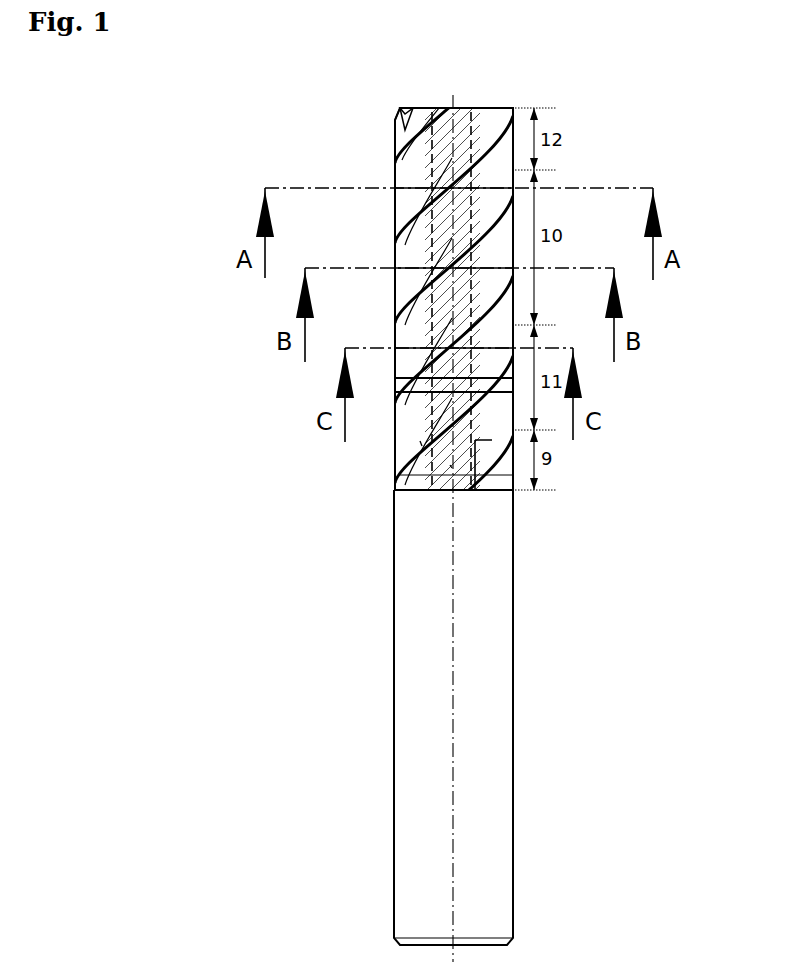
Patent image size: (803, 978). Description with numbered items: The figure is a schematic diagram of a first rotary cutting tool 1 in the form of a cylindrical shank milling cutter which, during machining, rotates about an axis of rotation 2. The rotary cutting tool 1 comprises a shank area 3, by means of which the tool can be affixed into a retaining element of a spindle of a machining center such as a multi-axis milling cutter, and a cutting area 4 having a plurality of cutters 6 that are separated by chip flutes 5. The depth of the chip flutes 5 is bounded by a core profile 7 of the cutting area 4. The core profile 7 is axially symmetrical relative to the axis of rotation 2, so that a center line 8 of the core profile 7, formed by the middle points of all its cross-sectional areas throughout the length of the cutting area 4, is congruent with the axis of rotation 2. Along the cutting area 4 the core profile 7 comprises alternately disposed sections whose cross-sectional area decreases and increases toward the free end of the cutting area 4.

The rotary cutting tool 1 is at (149, 584).
The axis of rotation 2 is at (452, 632).
The shank area 3 is at (360, 776).
The cutting area 4 is at (370, 140).
The chip flutes 5 is at (485, 125).
The cutters 6 is at (404, 108).
The core profile 7 is at (420, 441).
The center line 8 is at (450, 465).